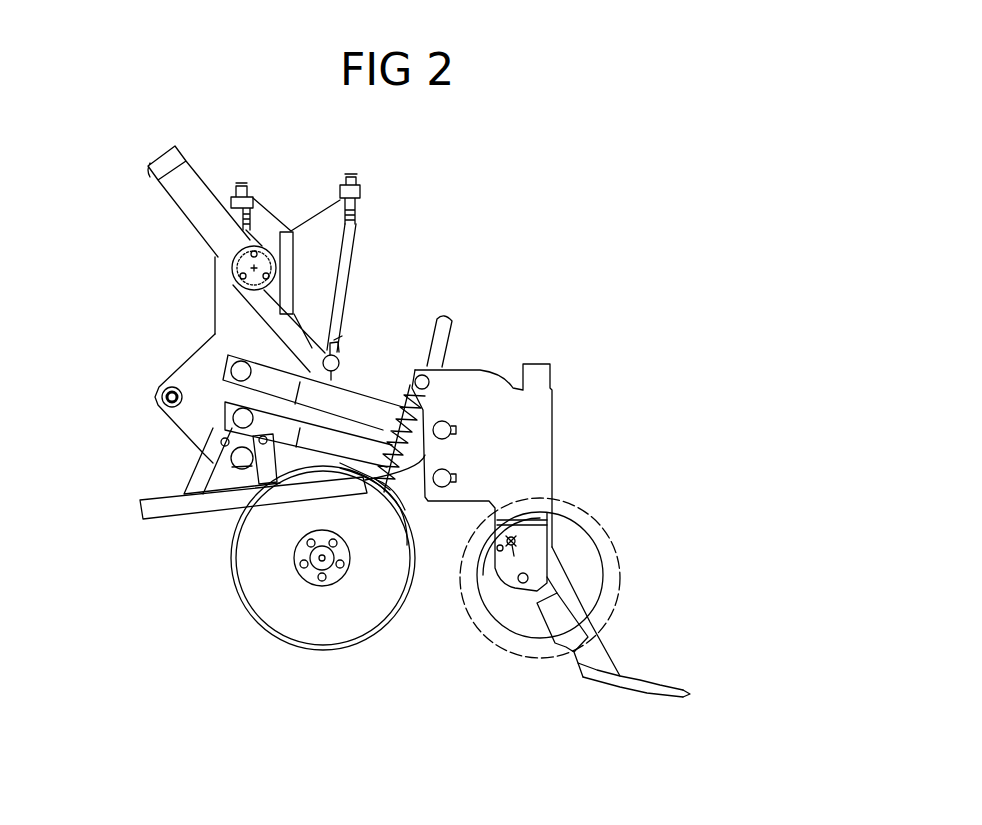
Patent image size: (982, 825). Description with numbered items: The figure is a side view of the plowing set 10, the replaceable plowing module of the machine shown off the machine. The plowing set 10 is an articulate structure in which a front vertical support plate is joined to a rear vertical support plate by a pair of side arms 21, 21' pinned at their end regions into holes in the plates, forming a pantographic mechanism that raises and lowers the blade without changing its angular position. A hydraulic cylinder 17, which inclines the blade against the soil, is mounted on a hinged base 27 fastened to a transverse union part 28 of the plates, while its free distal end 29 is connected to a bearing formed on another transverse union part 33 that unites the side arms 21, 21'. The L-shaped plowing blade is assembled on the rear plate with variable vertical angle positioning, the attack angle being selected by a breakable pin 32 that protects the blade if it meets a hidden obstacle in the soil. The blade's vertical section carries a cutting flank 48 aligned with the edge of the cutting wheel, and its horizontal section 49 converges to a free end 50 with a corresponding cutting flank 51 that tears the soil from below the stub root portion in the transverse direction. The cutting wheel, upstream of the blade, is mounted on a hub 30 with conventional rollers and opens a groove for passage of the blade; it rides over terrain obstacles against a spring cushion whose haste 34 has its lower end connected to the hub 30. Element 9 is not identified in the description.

The plowing set 10 is at (501, 240).
The hydraulic cylinder 17 is at (186, 172).
The hinged base 27 is at (220, 266).
The transverse union part 28 is at (292, 232).
The free distal end 29 is at (302, 322).
The transverse union part 33 is at (336, 350).
The side arm 21 is at (316, 377).
The side arm 21' is at (356, 362).
The haste 34 is at (450, 337).
The body 9 is at (398, 490).
The breakable pin 32 is at (522, 542).
The hub 30 is at (292, 563).
The free end 50 is at (670, 715).
The cutting flank 48 is at (563, 640).
The horizontal section 49 is at (641, 676).
The cutting flank 51 is at (683, 684).